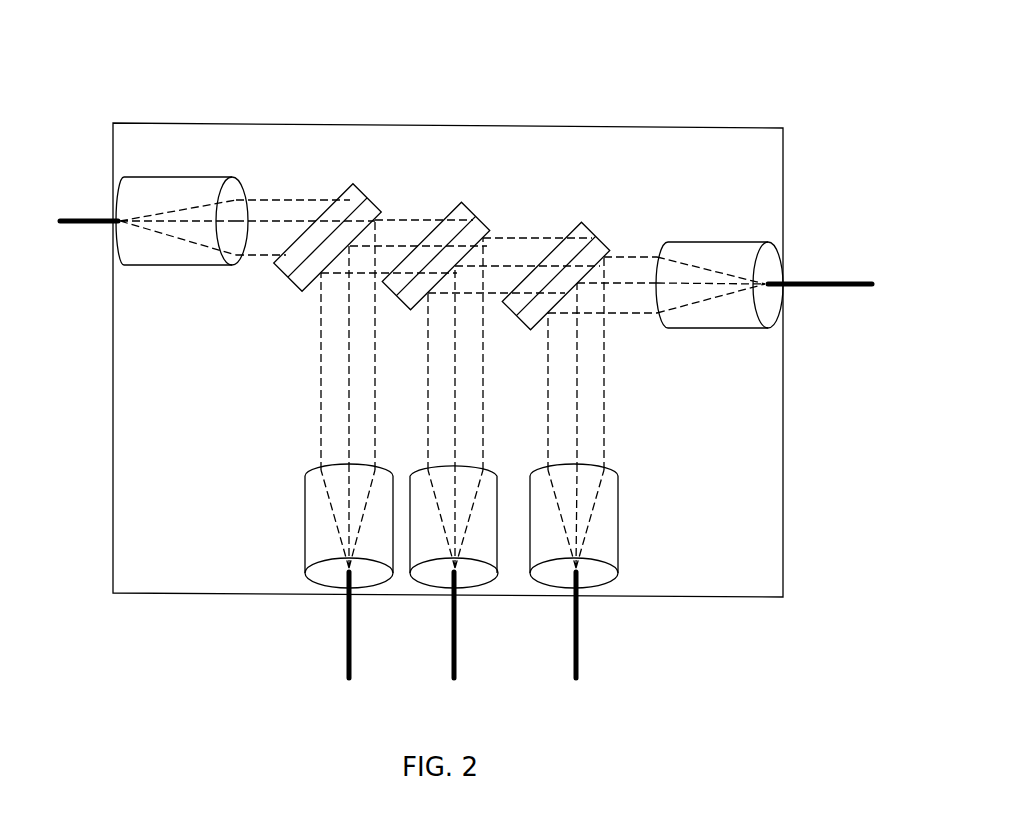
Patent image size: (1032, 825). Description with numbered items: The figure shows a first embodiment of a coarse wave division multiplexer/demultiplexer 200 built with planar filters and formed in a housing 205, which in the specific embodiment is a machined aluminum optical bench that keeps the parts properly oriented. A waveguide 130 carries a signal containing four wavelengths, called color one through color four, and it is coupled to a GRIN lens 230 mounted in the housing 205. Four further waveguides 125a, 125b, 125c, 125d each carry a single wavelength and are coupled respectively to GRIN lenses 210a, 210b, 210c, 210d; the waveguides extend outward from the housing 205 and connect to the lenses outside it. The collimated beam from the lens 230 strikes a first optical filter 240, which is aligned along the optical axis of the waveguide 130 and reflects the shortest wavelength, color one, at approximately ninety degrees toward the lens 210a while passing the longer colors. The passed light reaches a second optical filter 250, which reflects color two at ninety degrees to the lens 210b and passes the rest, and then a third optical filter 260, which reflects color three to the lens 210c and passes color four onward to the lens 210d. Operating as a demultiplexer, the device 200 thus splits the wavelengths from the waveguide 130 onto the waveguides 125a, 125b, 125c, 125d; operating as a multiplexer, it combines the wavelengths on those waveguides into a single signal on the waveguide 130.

The coarse wave division multiplexer/demultiplexer 200 is at (523, 97).
The housing 205 is at (252, 140).
The lens 210a is at (617, 543).
The lens 210b is at (497, 534).
The lens 210c is at (305, 500).
The lens 210d is at (187, 182).
The first optical filter 240 is at (588, 228).
The second optical filter 250 is at (470, 214).
The third optical filter 260 is at (356, 189).
The lens 230 is at (704, 239).
The waveguide 130 is at (827, 279).
The waveguide 125a is at (580, 636).
The waveguide 125b is at (458, 633).
The waveguide 125c is at (352, 630).
The waveguide 125d is at (76, 226).